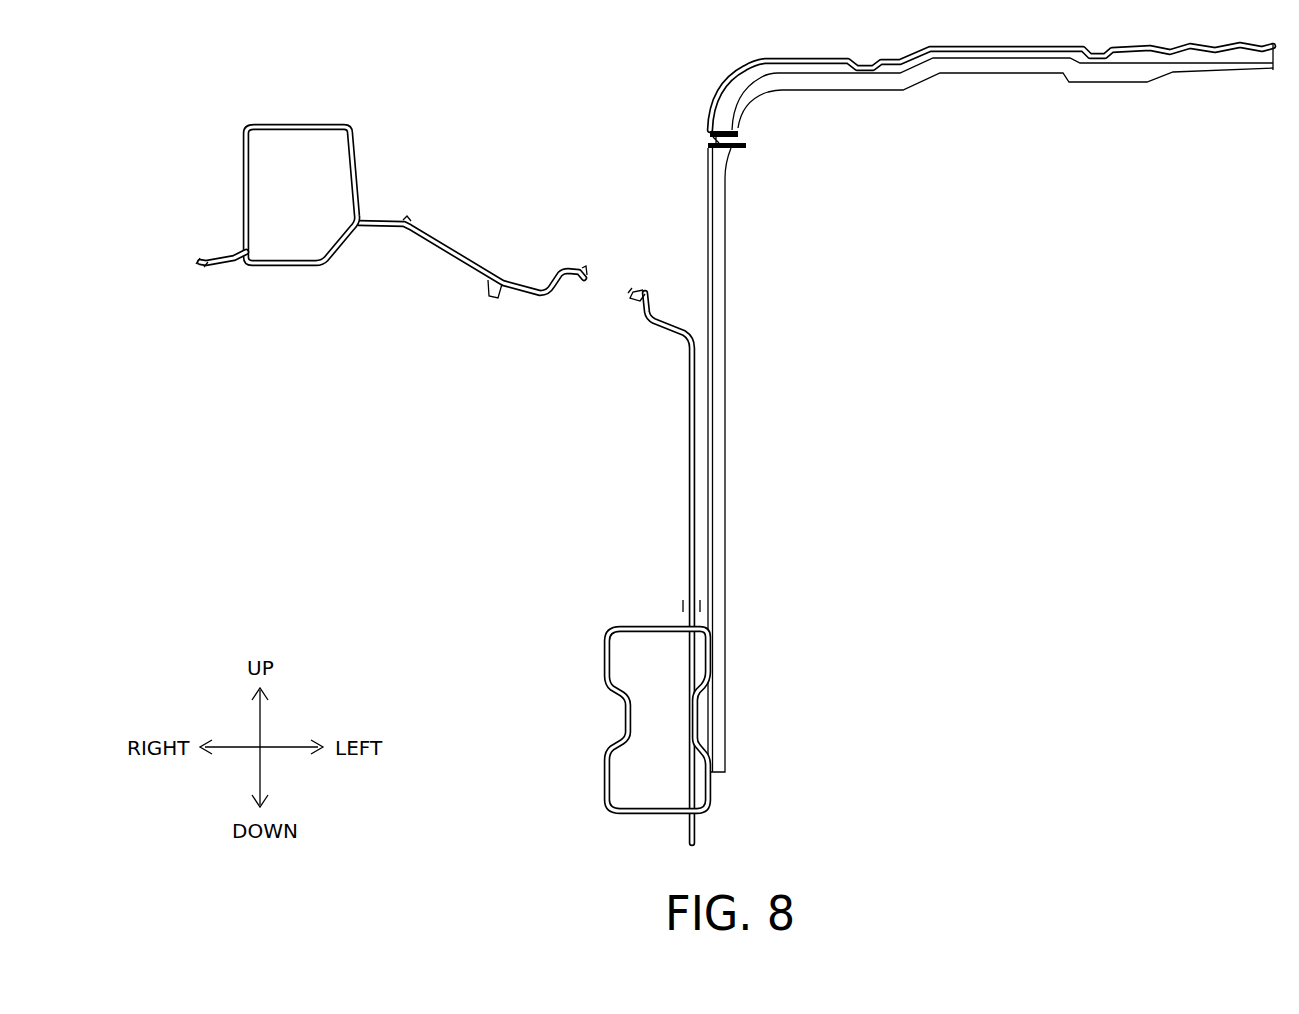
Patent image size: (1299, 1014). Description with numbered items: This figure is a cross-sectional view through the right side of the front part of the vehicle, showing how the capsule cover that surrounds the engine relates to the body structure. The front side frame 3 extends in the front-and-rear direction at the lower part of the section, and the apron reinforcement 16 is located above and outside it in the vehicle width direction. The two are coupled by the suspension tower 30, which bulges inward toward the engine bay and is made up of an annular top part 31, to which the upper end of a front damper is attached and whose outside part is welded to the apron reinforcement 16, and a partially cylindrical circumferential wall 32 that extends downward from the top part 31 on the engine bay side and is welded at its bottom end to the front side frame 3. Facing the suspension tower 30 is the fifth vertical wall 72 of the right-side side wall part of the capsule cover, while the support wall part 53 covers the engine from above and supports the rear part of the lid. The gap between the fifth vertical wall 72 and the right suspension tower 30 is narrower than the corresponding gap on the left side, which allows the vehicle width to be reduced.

The front side frame 3 is at (603, 660).
The apron reinforcement 16 is at (287, 123).
The suspension tower 30 is at (529, 518).
The top part 31 is at (462, 262).
The circumferential wall 32 is at (690, 483).
The support wall part 53 is at (968, 47).
The fifth vertical wall 72 is at (708, 418).